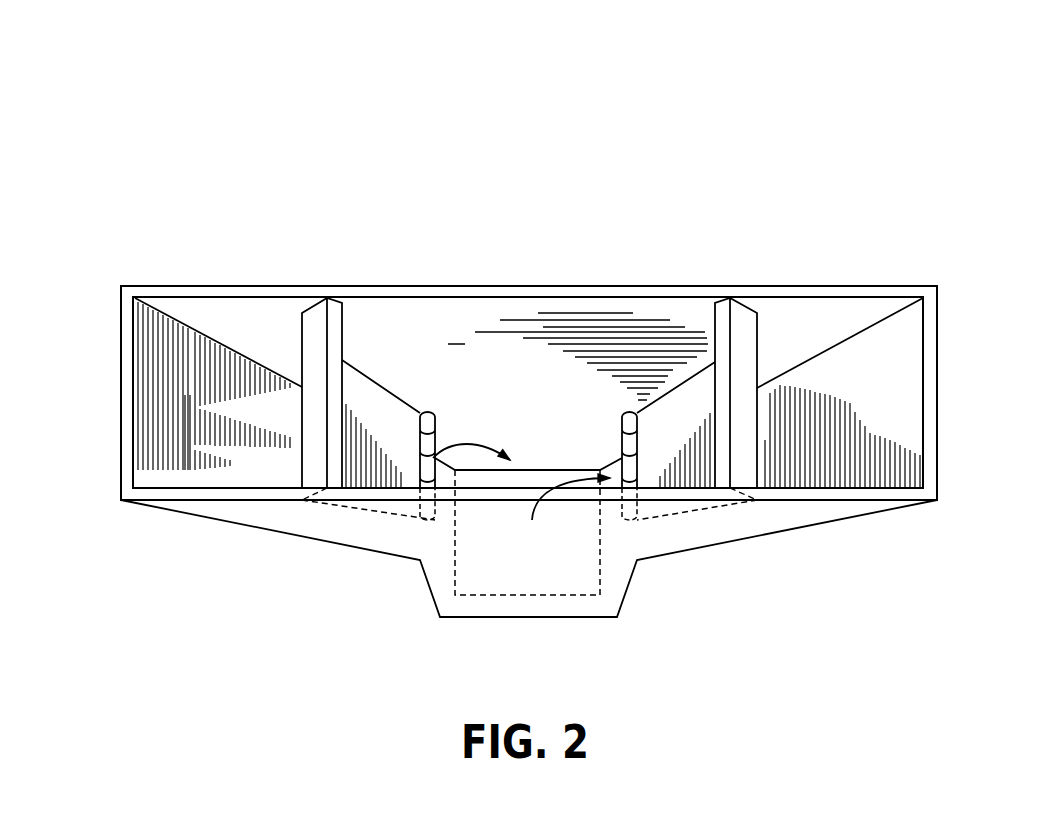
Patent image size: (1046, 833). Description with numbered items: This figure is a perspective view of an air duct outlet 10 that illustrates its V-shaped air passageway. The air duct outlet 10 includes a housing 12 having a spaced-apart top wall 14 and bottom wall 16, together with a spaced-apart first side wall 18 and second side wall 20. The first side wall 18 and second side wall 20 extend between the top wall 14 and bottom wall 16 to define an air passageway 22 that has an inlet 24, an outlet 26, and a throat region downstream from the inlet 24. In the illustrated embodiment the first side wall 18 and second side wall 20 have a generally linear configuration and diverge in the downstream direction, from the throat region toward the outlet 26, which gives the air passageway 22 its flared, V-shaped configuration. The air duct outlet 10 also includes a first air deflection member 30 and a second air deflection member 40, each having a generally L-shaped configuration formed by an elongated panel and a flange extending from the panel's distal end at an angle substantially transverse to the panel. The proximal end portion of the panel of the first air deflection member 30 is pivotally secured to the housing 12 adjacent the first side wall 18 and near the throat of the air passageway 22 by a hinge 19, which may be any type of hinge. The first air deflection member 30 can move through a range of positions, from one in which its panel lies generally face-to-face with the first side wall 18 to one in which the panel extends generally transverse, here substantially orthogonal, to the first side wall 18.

The air duct outlet 10 is at (421, 150).
The housing 12 is at (295, 538).
The top wall 14 is at (523, 285).
The bottom wall 16 is at (724, 530).
The first side wall 18 is at (890, 352).
The hinge 19 is at (622, 437).
The second side wall 20 is at (226, 352).
The air passageway 22 is at (450, 450).
The inlet 24 is at (532, 520).
The outlet 26 is at (197, 413).
The first air deflection member 30 is at (750, 303).
The second air deflection member 40 is at (315, 305).